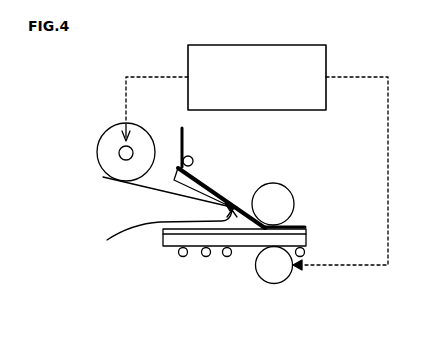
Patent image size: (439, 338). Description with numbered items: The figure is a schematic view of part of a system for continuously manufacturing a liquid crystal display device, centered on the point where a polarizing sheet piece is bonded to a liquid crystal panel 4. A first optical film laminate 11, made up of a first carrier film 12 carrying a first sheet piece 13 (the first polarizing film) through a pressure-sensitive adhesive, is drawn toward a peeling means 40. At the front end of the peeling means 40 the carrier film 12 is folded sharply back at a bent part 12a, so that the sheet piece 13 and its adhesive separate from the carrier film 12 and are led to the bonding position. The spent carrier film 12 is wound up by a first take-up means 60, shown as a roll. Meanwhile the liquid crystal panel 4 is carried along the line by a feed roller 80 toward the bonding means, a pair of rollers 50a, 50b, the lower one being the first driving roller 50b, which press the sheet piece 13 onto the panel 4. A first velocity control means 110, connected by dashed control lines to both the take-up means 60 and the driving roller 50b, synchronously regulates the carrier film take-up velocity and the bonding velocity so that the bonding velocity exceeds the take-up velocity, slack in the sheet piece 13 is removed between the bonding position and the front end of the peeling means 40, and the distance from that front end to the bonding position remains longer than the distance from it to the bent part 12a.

The liquid crystal panel 4 is at (157, 239).
The first optical film laminate 11 is at (183, 140).
The first carrier film 12 is at (150, 187).
The bent part 12a is at (154, 227).
The first sheet piece 13 is at (244, 211).
The peeling means 40 is at (176, 167).
The bonding means roller 50a is at (286, 187).
The first driving roller 50b is at (277, 277).
The first take-up means 60 is at (119, 152).
The feed roller 80 is at (235, 259).
The first velocity control means 110 is at (188, 55).